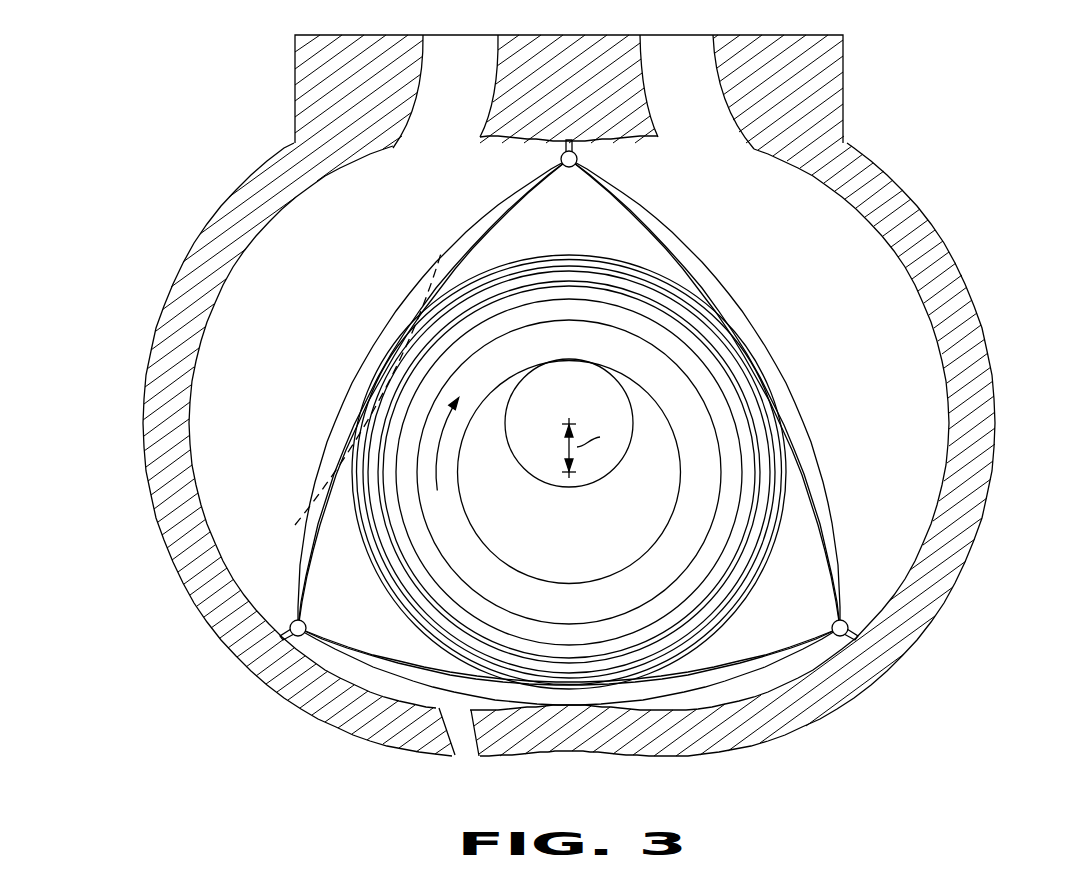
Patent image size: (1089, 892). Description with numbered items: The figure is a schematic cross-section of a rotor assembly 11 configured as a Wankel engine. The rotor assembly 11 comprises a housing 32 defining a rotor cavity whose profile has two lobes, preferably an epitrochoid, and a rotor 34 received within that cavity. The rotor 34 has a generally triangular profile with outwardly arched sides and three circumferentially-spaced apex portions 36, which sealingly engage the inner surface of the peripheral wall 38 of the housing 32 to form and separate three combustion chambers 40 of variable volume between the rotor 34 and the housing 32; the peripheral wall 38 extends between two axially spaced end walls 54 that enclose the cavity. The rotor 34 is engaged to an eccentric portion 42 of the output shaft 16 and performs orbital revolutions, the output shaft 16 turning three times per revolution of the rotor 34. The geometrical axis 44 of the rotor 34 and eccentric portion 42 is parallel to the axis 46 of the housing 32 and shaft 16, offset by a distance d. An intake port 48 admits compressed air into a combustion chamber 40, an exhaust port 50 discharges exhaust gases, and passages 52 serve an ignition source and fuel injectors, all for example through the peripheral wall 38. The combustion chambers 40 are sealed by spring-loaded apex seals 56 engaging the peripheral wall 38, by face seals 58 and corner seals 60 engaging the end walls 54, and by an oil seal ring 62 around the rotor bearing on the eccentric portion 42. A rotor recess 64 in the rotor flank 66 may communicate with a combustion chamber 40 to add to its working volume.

The rotor assembly 11 is at (215, 152).
The output shaft 16 is at (597, 457).
The housing 32 is at (907, 193).
The rotor 34 is at (818, 443).
The apex portions 36 is at (860, 642).
The peripheral wall 38 is at (955, 300).
The combustion chambers 40 is at (293, 341).
The eccentric portion 42 is at (591, 549).
The geometrical axis 44 is at (565, 473).
The axis 46 is at (562, 424).
The intake port 48 is at (692, 108).
The exhaust port 50 is at (447, 108).
The passages 52 is at (465, 742).
The end walls 54 is at (912, 487).
The apex seals 56 is at (281, 643).
The face seals 58 is at (312, 533).
The corner seals 60 is at (288, 620).
The oil seal ring 62 is at (675, 646).
The rotor recess 64 is at (330, 447).
The rotor flank 66 is at (337, 420).